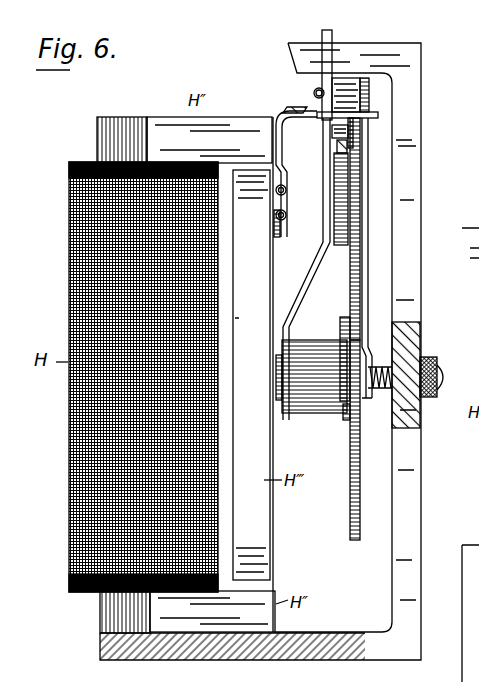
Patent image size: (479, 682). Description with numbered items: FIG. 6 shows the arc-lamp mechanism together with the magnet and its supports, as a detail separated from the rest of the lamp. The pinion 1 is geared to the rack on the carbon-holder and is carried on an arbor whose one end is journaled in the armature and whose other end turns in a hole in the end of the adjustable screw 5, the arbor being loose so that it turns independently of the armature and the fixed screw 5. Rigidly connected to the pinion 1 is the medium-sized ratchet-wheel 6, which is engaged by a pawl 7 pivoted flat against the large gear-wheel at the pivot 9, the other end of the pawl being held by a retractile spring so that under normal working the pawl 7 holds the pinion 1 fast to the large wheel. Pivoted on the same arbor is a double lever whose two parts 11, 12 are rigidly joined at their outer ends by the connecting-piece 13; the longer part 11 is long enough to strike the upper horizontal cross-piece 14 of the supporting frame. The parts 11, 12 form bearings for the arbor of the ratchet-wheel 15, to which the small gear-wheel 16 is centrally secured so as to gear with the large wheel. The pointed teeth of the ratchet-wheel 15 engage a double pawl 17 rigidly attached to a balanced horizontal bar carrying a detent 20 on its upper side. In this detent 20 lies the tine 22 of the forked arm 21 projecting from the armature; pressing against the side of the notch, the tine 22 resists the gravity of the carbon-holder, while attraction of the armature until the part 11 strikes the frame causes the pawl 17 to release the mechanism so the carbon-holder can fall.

The pinion 1 is at (302, 414).
The adjustable screw 5 is at (447, 377).
The ratchet-wheel 6 is at (341, 324).
The pawl 7 is at (350, 448).
The pivot 9 is at (338, 418).
The part of double lever 11 is at (303, 284).
The part of double lever 12 is at (404, 272).
The connecting-piece 13 is at (347, 92).
The upper horizontal cross-piece 14 is at (292, 50).
The ratchet-wheel 15 is at (334, 173).
The small gear-wheel 16 is at (354, 200).
The double pawl 17 is at (333, 142).
The detent 20 is at (353, 125).
The arm 21 is at (286, 110).
The tine 22 is at (378, 113).